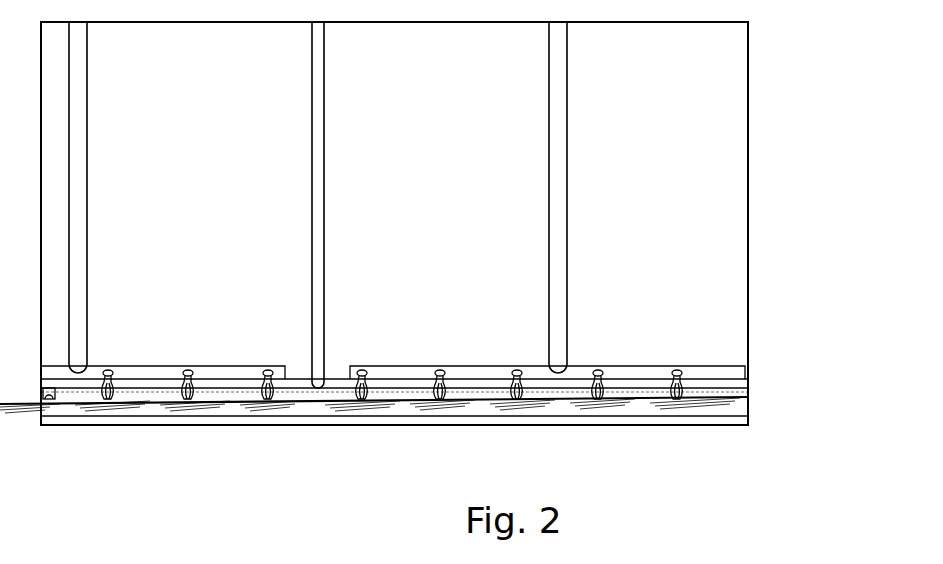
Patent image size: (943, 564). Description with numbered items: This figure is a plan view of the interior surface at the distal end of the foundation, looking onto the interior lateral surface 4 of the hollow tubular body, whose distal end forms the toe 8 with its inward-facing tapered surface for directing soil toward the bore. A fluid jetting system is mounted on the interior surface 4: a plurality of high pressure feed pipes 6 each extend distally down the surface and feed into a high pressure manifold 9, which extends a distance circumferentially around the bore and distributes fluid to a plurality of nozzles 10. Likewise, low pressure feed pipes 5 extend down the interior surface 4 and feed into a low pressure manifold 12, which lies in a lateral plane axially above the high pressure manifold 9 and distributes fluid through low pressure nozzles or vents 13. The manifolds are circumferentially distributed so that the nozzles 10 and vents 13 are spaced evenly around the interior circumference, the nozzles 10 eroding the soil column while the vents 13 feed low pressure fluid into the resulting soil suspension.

The interior lateral surface 4 is at (693, 118).
The low pressure feed pipes 5 is at (560, 228).
The high pressure feed pipes 6 is at (312, 383).
The toe 8 is at (728, 422).
The high pressure manifold 9 is at (228, 393).
The nozzles 10 is at (186, 402).
The low pressure manifold 12 is at (718, 375).
The low pressure nozzles or vents 13 is at (620, 367).